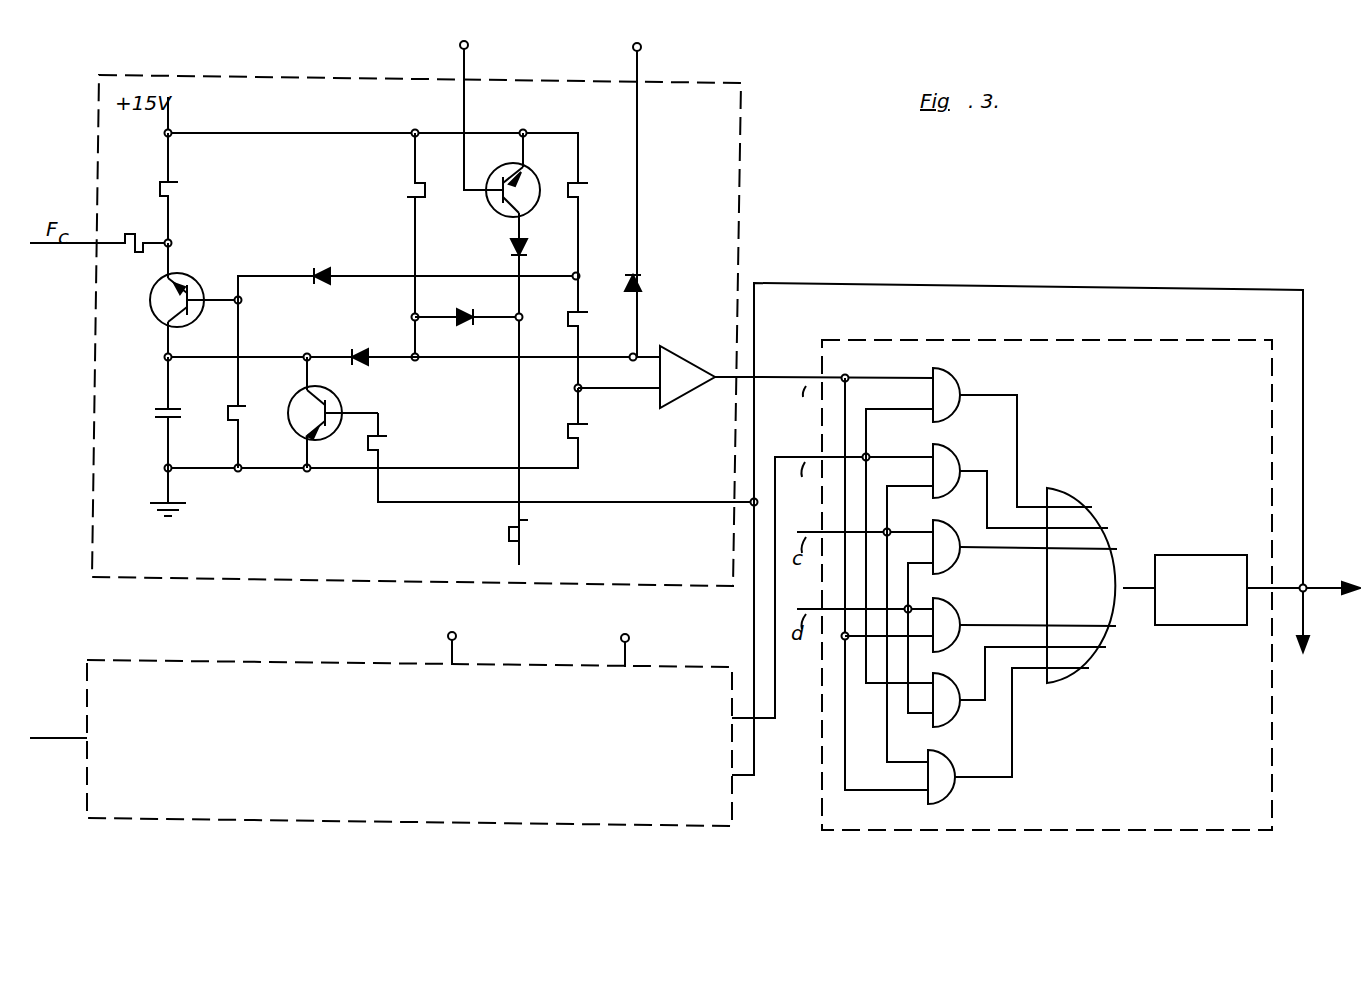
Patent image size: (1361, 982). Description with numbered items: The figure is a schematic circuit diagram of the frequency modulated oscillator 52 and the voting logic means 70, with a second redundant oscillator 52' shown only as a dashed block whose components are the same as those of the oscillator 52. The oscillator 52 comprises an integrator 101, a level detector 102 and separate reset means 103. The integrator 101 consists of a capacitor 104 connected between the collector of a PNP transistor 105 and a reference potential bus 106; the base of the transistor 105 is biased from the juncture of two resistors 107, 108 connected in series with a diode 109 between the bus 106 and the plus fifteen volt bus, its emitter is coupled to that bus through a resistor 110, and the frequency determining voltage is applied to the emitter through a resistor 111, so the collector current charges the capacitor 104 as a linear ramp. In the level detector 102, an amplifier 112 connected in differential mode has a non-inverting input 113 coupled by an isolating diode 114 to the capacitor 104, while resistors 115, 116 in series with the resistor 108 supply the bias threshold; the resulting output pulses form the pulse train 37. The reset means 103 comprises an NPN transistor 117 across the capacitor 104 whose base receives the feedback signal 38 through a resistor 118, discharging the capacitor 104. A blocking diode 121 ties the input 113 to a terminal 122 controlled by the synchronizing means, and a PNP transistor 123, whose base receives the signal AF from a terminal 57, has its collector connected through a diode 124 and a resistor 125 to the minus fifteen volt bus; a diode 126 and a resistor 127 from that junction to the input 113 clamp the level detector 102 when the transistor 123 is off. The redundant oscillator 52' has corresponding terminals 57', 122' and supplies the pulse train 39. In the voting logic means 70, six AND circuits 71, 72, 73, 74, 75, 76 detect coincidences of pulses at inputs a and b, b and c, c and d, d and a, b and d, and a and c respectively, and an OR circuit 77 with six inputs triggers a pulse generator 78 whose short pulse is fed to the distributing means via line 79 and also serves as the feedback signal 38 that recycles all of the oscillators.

The frequency modulated oscillator 52 is at (416, 308).
The second redundant oscillator 52' is at (381, 720).
The terminal 57 is at (473, 110).
The terminal 57' is at (466, 639).
The terminal 122 is at (641, 194).
The terminal 122' is at (630, 641).
The resistor 110 is at (178, 182).
The resistor 111 is at (128, 235).
The resistor 127 is at (407, 197).
The PNP transistor 123 is at (535, 178).
The resistor 108 is at (588, 183).
The diode 109 is at (325, 266).
The diode 124 is at (510, 247).
The diode 121 is at (643, 284).
The diode 126 is at (465, 308).
The isolating diode 114 is at (360, 350).
The resistor 115 is at (588, 312).
The non-inverting input 113 is at (640, 354).
The PNP transistor 105 is at (156, 310).
The integrator 101 is at (145, 379).
The resistor 107 is at (228, 414).
The NPN transistor 117 is at (296, 392).
The resistor 118 is at (388, 436).
The resistor 116 is at (568, 430).
The amplifier 112 is at (689, 392).
The level detector 102 is at (673, 393).
The capacitor 104 is at (157, 419).
The reset means 103 is at (341, 451).
The reference potential bus 106 is at (168, 484).
The resistor 125 is at (528, 520).
The pulse train 37 is at (783, 374).
The feedback signal 38 is at (930, 285).
The pulse train 39 is at (775, 685).
The voting logic means 70 is at (1078, 340).
The AND logic circuit 71 is at (955, 371).
The AND logic circuit 72 is at (955, 447).
The AND logic circuit 73 is at (955, 531).
The AND logic circuit 74 is at (955, 652).
The AND logic circuit 75 is at (955, 730).
The AND logic circuit 76 is at (950, 806).
The OR logic circuit 77 is at (1100, 517).
The pulse generator 78 is at (1203, 554).
The line 79 is at (1322, 584).